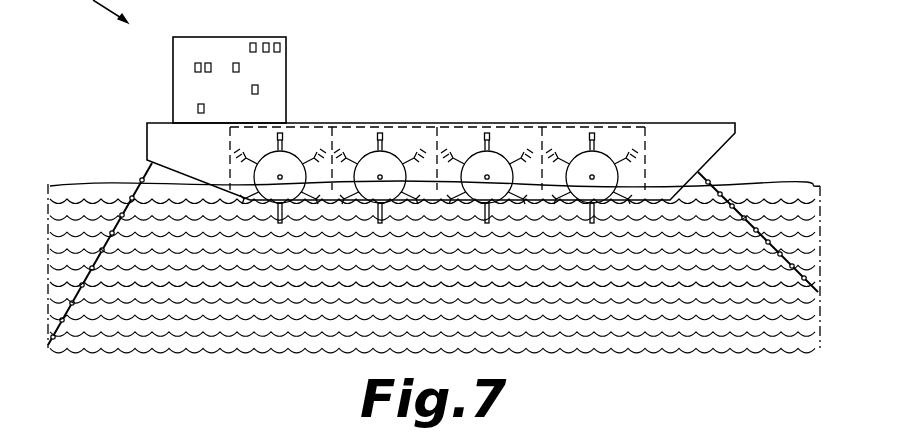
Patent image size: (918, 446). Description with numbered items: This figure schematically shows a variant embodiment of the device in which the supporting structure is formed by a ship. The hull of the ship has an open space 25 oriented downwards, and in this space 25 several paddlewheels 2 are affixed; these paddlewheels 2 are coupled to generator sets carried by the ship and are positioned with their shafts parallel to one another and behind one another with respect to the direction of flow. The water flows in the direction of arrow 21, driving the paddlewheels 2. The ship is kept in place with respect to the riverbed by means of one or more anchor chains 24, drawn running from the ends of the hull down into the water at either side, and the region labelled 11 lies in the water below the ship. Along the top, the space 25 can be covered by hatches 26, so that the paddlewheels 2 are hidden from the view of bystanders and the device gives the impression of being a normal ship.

The paddlewheel 2 is at (290, 165).
The water surface 11 is at (200, 323).
The arrow indicating direction of water flow 21 is at (576, 291).
The anchor chain 24 is at (107, 235).
The open space 25 is at (607, 142).
The hatch 26 is at (440, 125).